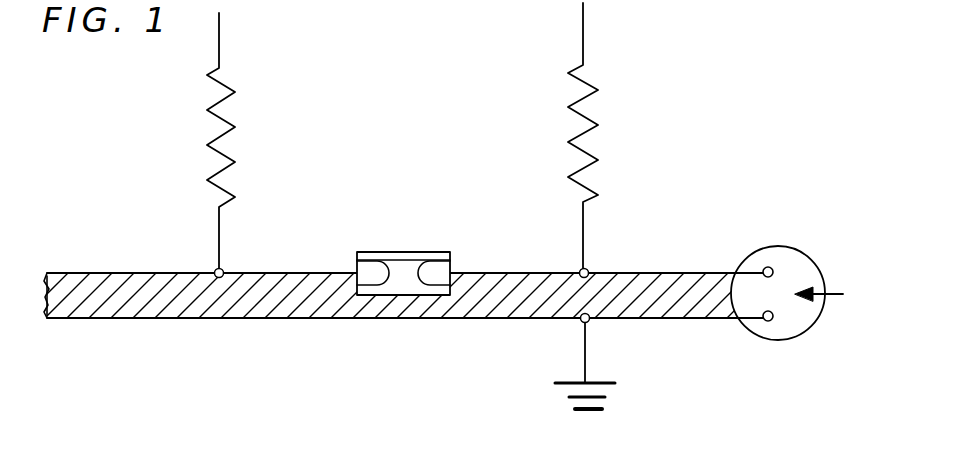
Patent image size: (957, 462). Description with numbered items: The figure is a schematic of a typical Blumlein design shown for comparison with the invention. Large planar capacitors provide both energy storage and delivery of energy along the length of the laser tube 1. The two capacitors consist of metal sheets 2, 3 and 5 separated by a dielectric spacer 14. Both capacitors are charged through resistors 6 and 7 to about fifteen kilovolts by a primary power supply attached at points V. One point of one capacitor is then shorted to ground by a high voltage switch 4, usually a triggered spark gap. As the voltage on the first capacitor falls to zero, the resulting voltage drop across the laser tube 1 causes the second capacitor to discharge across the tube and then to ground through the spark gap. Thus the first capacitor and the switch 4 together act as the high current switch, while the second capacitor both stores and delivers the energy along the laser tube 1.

The laser tube 1 is at (412, 257).
The metal sheet 2 is at (655, 272).
The metal sheet 3 is at (147, 273).
The high voltage switch 4 is at (803, 322).
The metal sheet 5 is at (390, 320).
The resistor 6 is at (215, 120).
The resistor 7 is at (597, 98).
The dielectric spacer 14 is at (52, 297).